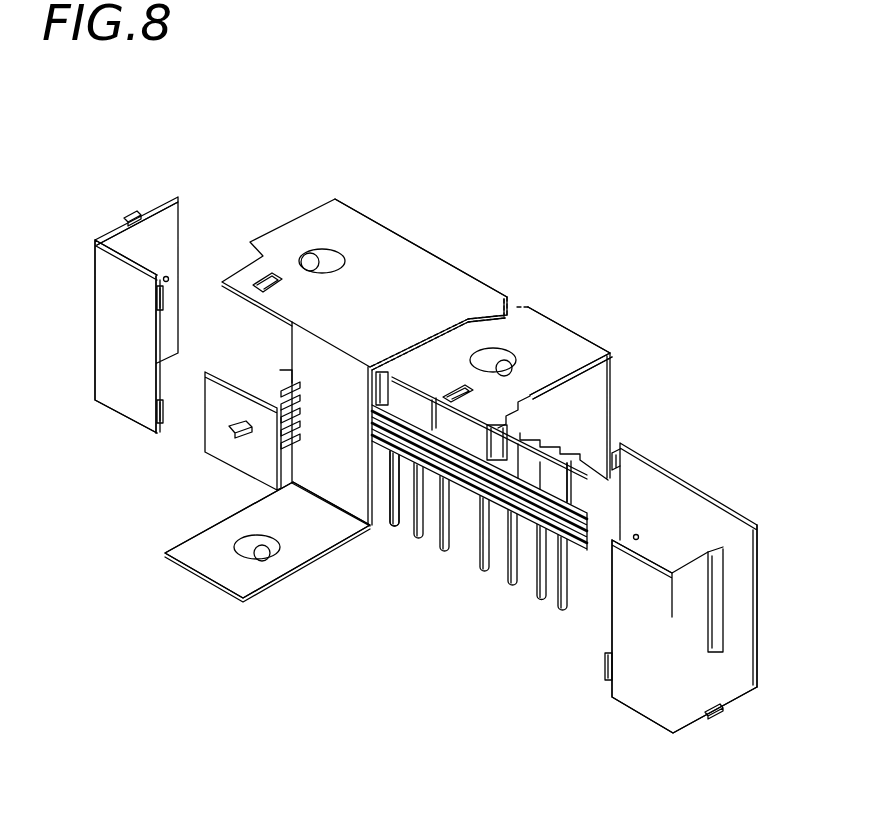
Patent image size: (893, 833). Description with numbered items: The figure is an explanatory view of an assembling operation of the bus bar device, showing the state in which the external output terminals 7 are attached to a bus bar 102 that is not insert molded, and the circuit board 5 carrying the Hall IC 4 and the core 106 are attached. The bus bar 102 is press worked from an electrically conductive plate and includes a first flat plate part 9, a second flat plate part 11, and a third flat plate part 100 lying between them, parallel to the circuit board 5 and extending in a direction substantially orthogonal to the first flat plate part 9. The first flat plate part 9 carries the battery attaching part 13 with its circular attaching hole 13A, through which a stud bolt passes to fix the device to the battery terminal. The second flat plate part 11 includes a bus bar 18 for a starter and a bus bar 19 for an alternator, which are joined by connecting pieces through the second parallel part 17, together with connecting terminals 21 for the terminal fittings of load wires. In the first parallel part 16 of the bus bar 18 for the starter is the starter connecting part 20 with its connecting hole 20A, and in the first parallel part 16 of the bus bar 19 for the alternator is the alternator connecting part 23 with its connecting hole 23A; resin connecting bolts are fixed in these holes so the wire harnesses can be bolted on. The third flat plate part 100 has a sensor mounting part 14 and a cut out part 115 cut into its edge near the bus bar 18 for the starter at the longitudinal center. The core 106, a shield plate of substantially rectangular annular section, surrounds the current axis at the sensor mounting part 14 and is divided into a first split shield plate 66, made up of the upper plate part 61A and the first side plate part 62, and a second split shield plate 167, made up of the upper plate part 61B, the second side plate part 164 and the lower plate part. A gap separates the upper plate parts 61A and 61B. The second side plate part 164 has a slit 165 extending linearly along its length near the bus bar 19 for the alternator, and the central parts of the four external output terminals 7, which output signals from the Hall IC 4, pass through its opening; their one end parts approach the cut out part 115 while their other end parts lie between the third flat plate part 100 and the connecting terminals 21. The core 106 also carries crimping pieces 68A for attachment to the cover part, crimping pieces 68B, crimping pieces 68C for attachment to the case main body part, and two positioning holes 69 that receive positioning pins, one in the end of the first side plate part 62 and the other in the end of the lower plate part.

The Hall IC 4 is at (236, 440).
The circuit board 5 is at (243, 438).
The external output terminals 7 is at (578, 482).
The first flat plate part 9 is at (294, 559).
The second flat plate part 11 is at (440, 388).
The battery attaching part 13 is at (263, 557).
The attaching hole 13A is at (258, 552).
The sensor mounting part 14 is at (318, 437).
The first parallel part 16 is at (476, 302).
The second parallel part 17 is at (613, 372).
The bus bar for a starter 18 is at (407, 256).
The bus bar for an alternator 19 is at (550, 383).
The starter connecting part 20 is at (364, 258).
The connecting hole 20A is at (300, 252).
The connecting terminals 21 is at (479, 494).
The alternator connecting part 23 is at (555, 366).
The connecting hole 23A is at (505, 374).
The upper plate part 61A is at (126, 410).
The upper plate part 61B is at (645, 703).
The first side plate part 62 is at (158, 216).
The first split shield plate 66 is at (149, 289).
The crimping pieces 68A is at (160, 292).
The crimping pieces 68B is at (620, 443).
The crimping pieces 68C is at (128, 214).
The positioning holes 69 is at (168, 276).
The third flat plate part 100 is at (387, 528).
The bus bar 102 is at (440, 388).
The core 106 is at (435, 446).
The cut out part 115 is at (290, 381).
The second side plate part 164 is at (757, 568).
The slit 165 is at (702, 559).
The second split shield plate 167 is at (698, 579).